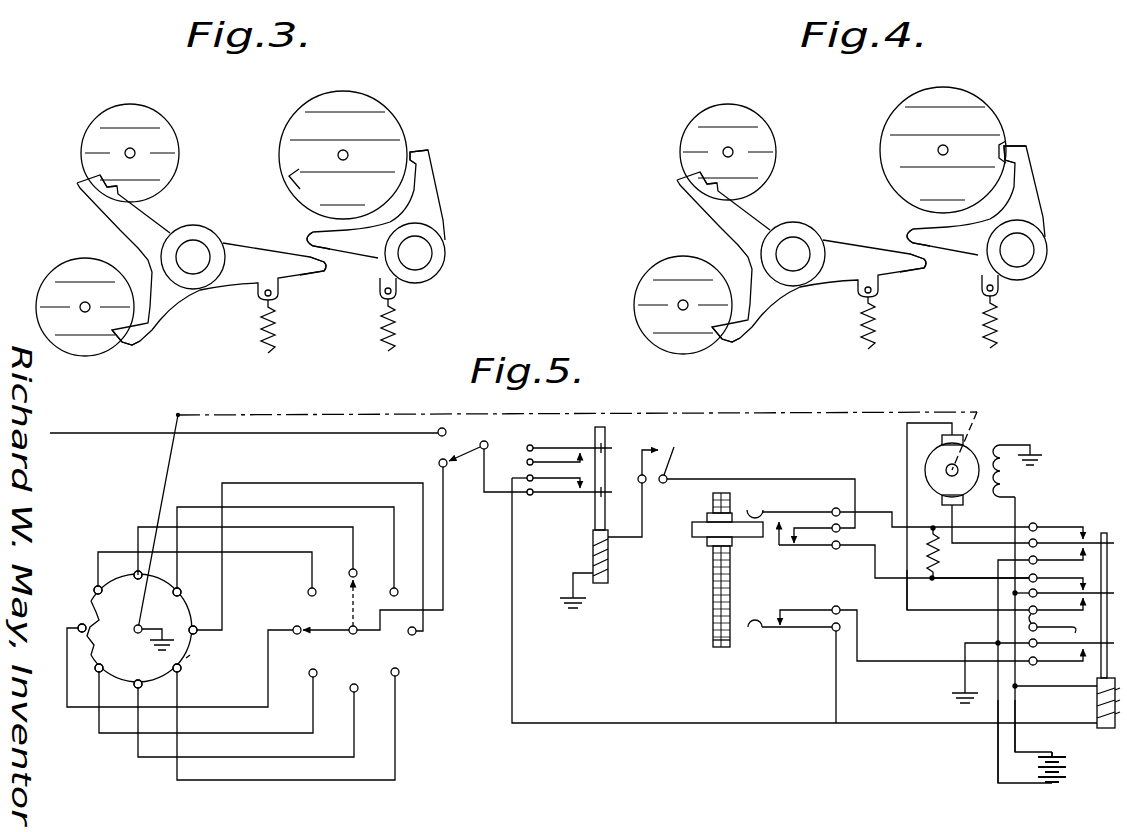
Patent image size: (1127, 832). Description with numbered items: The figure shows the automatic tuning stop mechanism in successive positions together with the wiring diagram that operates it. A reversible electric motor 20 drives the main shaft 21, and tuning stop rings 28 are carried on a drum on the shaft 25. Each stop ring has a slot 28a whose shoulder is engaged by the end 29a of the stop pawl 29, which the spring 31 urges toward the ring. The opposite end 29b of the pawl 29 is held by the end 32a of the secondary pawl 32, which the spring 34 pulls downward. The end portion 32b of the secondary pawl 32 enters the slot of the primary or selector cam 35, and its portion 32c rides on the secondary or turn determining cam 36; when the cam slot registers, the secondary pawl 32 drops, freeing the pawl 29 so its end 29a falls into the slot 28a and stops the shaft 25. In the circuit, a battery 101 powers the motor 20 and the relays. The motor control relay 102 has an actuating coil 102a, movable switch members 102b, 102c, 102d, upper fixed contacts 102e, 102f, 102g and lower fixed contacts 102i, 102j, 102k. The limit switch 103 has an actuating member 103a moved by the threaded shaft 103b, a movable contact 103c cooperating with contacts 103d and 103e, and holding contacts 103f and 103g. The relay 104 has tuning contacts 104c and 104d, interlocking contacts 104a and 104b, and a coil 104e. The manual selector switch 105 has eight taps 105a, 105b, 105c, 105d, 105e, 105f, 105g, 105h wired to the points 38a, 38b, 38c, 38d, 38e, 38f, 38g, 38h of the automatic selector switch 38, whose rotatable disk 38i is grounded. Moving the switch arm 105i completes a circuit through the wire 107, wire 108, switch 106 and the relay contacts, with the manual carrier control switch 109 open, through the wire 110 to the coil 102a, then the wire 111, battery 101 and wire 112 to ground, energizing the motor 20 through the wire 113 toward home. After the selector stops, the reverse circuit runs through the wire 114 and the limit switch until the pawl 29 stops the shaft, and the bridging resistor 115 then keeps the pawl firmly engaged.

In FIG. 5, the reversible electric motor 20 is at (962, 460).
In FIG. 5, the main shaft 21 is at (780, 412).
In FIG. 3, the shaft 25 is at (338, 153).
In FIG. 3, the tuning stop ring 28 is at (385, 110).
In FIG. 4, the tuning stop ring 28 is at (988, 103).
In FIG. 3, the slot in stop ring 28a is at (291, 178).
In FIG. 4, the slot in stop ring 28a is at (1004, 148).
In FIG. 3, the stop element or pawl 29 is at (440, 211).
In FIG. 4, the stop element or pawl 29 is at (1025, 198).
In FIG. 3, the end of pawl 29a is at (413, 150).
In FIG. 4, the end of pawl 29a is at (1012, 148).
In FIG. 3, the end of pawl 29b is at (305, 235).
In FIG. 4, the end of pawl 29b is at (905, 240).
In FIG. 3, the spring 31 is at (394, 323).
In FIG. 4, the spring 31 is at (990, 316).
In FIG. 3, the secondary pawl 32 is at (173, 225).
In FIG. 4, the secondary pawl 32 is at (760, 223).
In FIG. 3, the end of secondary pawl 32a is at (327, 263).
In FIG. 4, the end of secondary pawl 32a is at (932, 263).
In FIG. 3, the end portion of secondary pawl 32b is at (143, 335).
In FIG. 4, the end portion of secondary pawl 32b is at (743, 334).
In FIG. 3, the end portion of secondary pawl 32c is at (78, 184).
In FIG. 4, the end portion of secondary pawl 32c is at (697, 186).
In FIG. 3, the spring 34 is at (272, 337).
In FIG. 4, the spring 34 is at (873, 335).
In FIG. 3, the primary or selector cam 35 is at (74, 262).
In FIG. 4, the primary or selector cam 35 is at (642, 282).
In FIG. 3, the secondary or turn determining cam 36 is at (160, 118).
In FIG. 4, the secondary or turn determining cam 36 is at (707, 108).
In FIG. 5, the automatic selector switch 38 is at (184, 599).
In FIG. 5, the selector switch point 38a is at (79, 622).
In FIG. 5, the selector switch point 38b is at (95, 587).
In FIG. 5, the selector switch contact 38c is at (136, 580).
In FIG. 5, the selector switch point 38d is at (175, 596).
In FIG. 5, the selector switch point 38e is at (197, 633).
In FIG. 5, the selector switch point 38f is at (181, 671).
In FIG. 5, the selector switch point 38g is at (153, 676).
In FIG. 5, the selector switch point 38h is at (112, 658).
In FIG. 5, the selector switch rotatable disk 38i is at (190, 658).
In FIG. 5, the battery 101 is at (1062, 772).
In FIG. 5, the motor control relay 102 is at (1096, 528).
In FIG. 5, the actuating coil 102a is at (1095, 697).
In FIG. 5, the movable switch member 102b is at (1062, 537).
In FIG. 5, the movable switch member 102c is at (1062, 587).
In FIG. 5, the movable switch member 102d is at (1062, 637).
In FIG. 5, the fixed contact 102e is at (1056, 524).
In FIG. 5, the fixed contact 102f is at (1056, 575).
In FIG. 5, the fixed contact 102g is at (1052, 622).
In FIG. 5, the fixed contact 102i is at (1056, 608).
In FIG. 5, the fixed contact 102j is at (1056, 655).
In FIG. 5, the relay contact 102k is at (1056, 554).
In FIG. 5, the limit switch 103 is at (712, 591).
In FIG. 5, the actuating member 103a is at (693, 532).
In FIG. 5, the threaded shaft 103b is at (712, 633).
In FIG. 5, the movable contact element 103c is at (782, 512).
In FIG. 5, the contact 103d is at (777, 537).
In FIG. 5, the contact 103e is at (802, 532).
In FIG. 5, the limit switch contact 103f is at (787, 607).
In FIG. 5, the limit switch contact 103g is at (767, 633).
In FIG. 5, the relay 104 is at (610, 452).
In FIG. 5, the interlocking contact 104a is at (578, 455).
In FIG. 5, the interlocking contact 104b is at (527, 446).
In FIG. 5, the contact 104c is at (563, 476).
In FIG. 5, the contact 104d is at (580, 495).
In FIG. 5, the relay coil 104e is at (594, 560).
In FIG. 5, the manual selector switch 105 is at (406, 680).
In FIG. 5, the switch tap 105a is at (294, 627).
In FIG. 5, the switch tap 105b is at (309, 590).
In FIG. 5, the switch tap 105c is at (350, 570).
In FIG. 5, the switch tap 105d is at (391, 588).
In FIG. 5, the switch tap 105e is at (418, 634).
In FIG. 5, the switch tap 105f is at (400, 671).
In FIG. 5, the switch tap 105g is at (368, 679).
In FIG. 5, the switch tap 105h is at (313, 669).
In FIG. 5, the manually movable switch arm 105i is at (330, 630).
In FIG. 5, the switch 106 is at (454, 455).
In FIG. 5, the wire 107 is at (290, 511).
In FIG. 5, the wire 108 is at (446, 549).
In FIG. 5, the manual carrier control switch 109 is at (680, 460).
In FIG. 5, the wire 110 is at (662, 722).
In FIG. 5, the wire 111 is at (1020, 744).
In FIG. 5, the wire 112 is at (995, 738).
In FIG. 5, the wire 113 is at (905, 596).
In FIG. 5, the wire 114 is at (975, 582).
In FIG. 5, the bridging resistor 115 is at (941, 560).